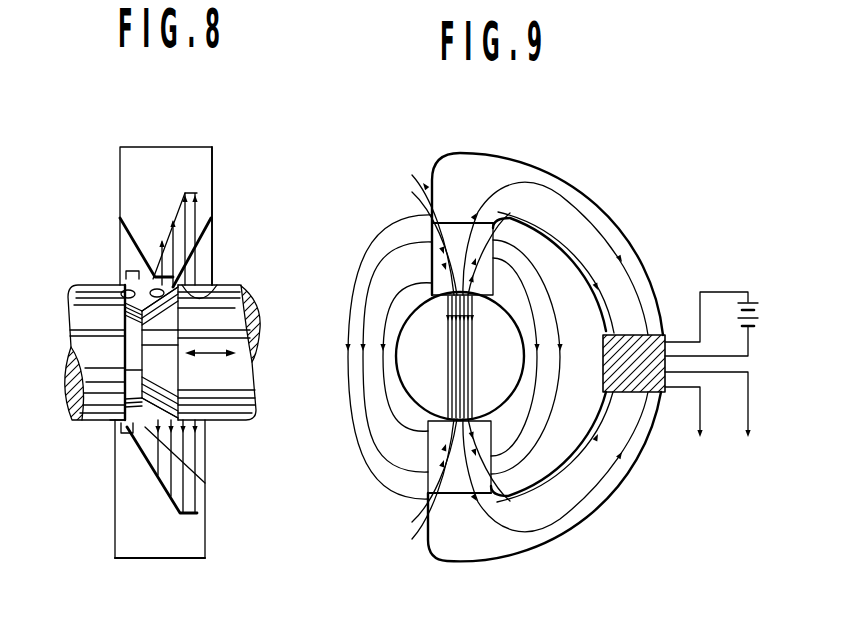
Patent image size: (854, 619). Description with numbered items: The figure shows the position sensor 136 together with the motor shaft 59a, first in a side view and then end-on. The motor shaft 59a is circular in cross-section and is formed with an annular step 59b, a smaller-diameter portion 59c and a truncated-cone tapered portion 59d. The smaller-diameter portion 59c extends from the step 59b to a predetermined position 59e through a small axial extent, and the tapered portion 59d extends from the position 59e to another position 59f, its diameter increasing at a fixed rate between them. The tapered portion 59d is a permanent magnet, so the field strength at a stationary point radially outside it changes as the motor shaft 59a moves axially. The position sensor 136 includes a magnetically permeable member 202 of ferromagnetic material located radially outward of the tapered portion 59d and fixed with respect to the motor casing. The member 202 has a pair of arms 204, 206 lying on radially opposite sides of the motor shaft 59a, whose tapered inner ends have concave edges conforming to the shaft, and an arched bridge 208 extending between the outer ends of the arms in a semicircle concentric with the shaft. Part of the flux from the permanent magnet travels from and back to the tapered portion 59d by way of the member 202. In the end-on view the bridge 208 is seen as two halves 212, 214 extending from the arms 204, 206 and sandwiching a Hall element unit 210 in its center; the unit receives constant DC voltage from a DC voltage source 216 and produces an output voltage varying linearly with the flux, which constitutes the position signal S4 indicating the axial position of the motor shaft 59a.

In FIG. 8, the position sensor 136 is at (222, 163).
In FIG. 9, the position sensor 136 is at (590, 172).
In FIG. 8, the magnetically permeable member 202 is at (160, 162).
In FIG. 9, the magnetically permeable member 202 is at (491, 168).
In FIG. 8, the arm 204 is at (147, 242).
In FIG. 9, the arm 204 is at (445, 238).
In FIG. 8, the arm 206 is at (143, 468).
In FIG. 9, the arm 206 is at (445, 485).
In FIG. 8, the bridge 208 is at (128, 255).
In FIG. 9, the bridge 208 is at (615, 233).
In FIG. 9, the Hall element unit 210 is at (651, 377).
In FIG. 9, the bridge half 212 is at (598, 210).
In FIG. 9, the bridge half 214 is at (586, 515).
In FIG. 9, the DC voltage source 216 is at (741, 305).
In FIG. 8, the motor shaft 59a is at (223, 320).
In FIG. 8, the annular step 59b is at (127, 299).
In FIG. 8, the smaller-diameter portion 59c is at (130, 372).
In FIG. 8, the tapered portion 59d is at (200, 288).
In FIG. 8, the predetermined position 59e is at (112, 425).
In FIG. 8, the predetermined position 59f is at (195, 410).
In FIG. 9, the position signal S4 is at (728, 465).